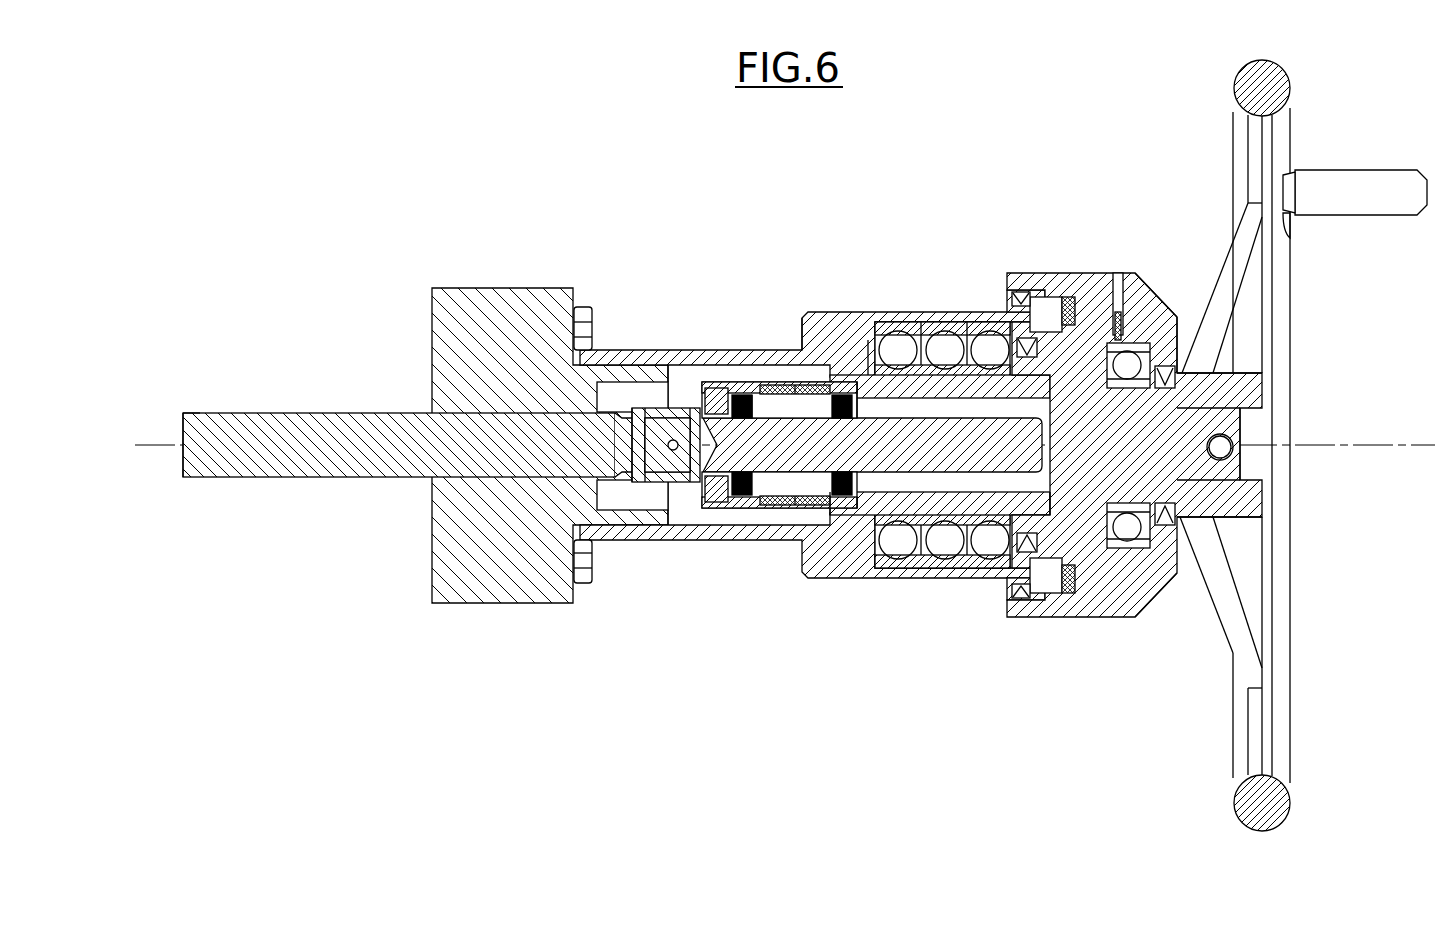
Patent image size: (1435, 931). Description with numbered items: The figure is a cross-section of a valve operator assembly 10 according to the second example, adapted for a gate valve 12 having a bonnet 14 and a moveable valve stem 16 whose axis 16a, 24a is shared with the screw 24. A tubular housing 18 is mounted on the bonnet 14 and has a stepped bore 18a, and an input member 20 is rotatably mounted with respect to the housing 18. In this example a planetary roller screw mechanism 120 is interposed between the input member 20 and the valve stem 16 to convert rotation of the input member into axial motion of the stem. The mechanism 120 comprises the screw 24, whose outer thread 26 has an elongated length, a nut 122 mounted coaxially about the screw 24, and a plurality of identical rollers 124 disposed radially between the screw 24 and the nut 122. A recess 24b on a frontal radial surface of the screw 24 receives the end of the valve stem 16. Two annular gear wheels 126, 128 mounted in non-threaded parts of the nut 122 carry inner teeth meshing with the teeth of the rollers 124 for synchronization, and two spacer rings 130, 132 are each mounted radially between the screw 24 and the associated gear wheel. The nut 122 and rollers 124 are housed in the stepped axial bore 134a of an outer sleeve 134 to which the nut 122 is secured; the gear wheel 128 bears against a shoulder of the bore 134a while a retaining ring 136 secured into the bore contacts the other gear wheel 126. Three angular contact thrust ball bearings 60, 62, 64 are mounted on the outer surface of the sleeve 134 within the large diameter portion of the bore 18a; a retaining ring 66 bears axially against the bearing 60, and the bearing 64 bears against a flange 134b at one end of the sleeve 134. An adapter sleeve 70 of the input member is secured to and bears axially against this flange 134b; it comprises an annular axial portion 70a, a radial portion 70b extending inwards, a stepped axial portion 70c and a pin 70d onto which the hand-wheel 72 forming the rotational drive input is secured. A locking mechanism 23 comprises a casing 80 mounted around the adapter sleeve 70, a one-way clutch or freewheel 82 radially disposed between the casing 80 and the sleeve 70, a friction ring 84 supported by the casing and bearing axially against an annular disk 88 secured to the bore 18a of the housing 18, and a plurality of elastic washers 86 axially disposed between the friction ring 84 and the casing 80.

The valve operator assembly 10 is at (798, 272).
The gate valve 12 is at (512, 268).
The bonnet 14 is at (478, 296).
The valve stem 16 is at (245, 415).
The axis 16a is at (165, 435).
The tubular housing 18 is at (968, 305).
The bore 18a is at (690, 378).
The input member 20 is at (1338, 134).
The locking mechanism 23 is at (1158, 275).
The screw 24 is at (775, 465).
The coupling end 24a is at (168, 432).
The recess 24b is at (680, 468).
The outer thread 26 is at (1015, 332).
The rolling bearing 60 is at (905, 320).
The rolling bearing 62 is at (938, 320).
The rolling bearing 64 is at (988, 320).
The retaining ring 66 is at (868, 372).
The adapter sleeve 70 is at (1250, 460).
The annular axial portion 70a is at (1050, 345).
The radial portion 70b is at (1056, 530).
The stepped axial portion 70c is at (1135, 480).
The pin 70d is at (1208, 428).
The hand-wheel 72 is at (1283, 718).
The casing 80 is at (1168, 296).
The one-way clutch 82 is at (1092, 545).
The friction ring 84 is at (1068, 330).
The elastic washers 86 is at (1082, 298).
The annular disk 88 is at (1022, 560).
The planetary roller screw mechanism 120 is at (810, 525).
The nut 122 is at (752, 505).
The rollers 124 is at (822, 492).
The annular gear wheel 126 is at (737, 382).
The annular gear wheel 128 is at (838, 395).
The spacer ring 130 is at (757, 392).
The spacer ring 132 is at (847, 380).
The outer sleeve 134 is at (898, 512).
The axial bore 134a is at (945, 480).
The flange 134b is at (1000, 480).
The retaining ring 136 is at (718, 520).